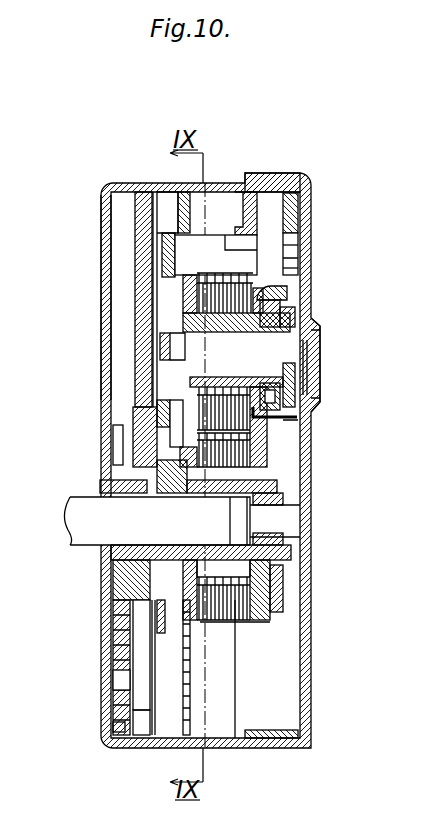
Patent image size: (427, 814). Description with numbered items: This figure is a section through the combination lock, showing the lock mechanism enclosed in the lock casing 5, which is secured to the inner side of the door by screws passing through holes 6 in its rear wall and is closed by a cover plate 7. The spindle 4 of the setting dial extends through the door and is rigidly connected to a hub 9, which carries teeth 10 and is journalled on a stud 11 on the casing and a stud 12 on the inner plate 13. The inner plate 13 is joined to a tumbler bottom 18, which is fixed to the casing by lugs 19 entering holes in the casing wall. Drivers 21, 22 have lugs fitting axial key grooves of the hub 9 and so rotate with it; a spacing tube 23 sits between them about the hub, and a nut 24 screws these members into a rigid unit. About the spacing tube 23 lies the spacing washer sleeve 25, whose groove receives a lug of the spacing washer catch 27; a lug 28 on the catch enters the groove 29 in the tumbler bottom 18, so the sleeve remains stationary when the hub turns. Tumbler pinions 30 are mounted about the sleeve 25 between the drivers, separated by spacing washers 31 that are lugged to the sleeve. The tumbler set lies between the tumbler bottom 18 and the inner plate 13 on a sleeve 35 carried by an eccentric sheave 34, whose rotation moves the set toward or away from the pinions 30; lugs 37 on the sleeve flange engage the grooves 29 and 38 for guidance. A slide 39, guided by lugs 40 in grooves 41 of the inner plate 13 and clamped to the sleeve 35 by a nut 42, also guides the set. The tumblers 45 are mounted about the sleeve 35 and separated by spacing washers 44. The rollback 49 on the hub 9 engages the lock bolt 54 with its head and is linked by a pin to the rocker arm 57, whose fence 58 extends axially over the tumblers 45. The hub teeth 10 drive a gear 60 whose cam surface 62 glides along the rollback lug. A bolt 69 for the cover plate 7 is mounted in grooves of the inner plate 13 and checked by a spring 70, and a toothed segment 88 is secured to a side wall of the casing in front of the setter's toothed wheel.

The dial shaft or spindle 4 is at (100, 513).
The lock casing 5 is at (148, 641).
The holes 6 is at (107, 695).
The cover plate 7 is at (303, 695).
The hub 9 is at (125, 572).
The teeth 10 is at (122, 435).
The stud 11 is at (112, 553).
The stud 12 is at (293, 512).
The inner plate 13 is at (293, 202).
The tumbler bottom 18 is at (157, 183).
The lugs 19 is at (178, 182).
The driver 21 is at (265, 596).
The driver 22 is at (160, 613).
The spacing tube 23 is at (290, 548).
The nut 24 is at (285, 480).
The spacing washer sleeve 25 is at (280, 567).
The spacing washer catch 27 is at (133, 453).
The lug 28 is at (180, 417).
The groove 29 is at (175, 385).
The tumbler pinions 30 is at (200, 622).
The spacing washers 31 is at (250, 613).
The eccentric sheave 34 is at (320, 362).
The sleeve 35 is at (320, 343).
The lugs 37 is at (190, 286).
The groove 38 is at (165, 262).
The slide 39 is at (320, 323).
The lugs 40 is at (292, 300).
The grooves 41 is at (290, 283).
The nut 42 is at (275, 318).
The spacing washers 44 is at (290, 270).
The tumblers 45 is at (239, 274).
The rollback 49 is at (157, 475).
The lock bolt 54 is at (101, 206).
The rocker arm 57 is at (140, 228).
The fence 58 is at (295, 238).
The gear 60 is at (113, 740).
The cam surface 62 is at (142, 728).
The bolt 69 is at (270, 173).
The spring 70 is at (225, 207).
The toothed segment 88 is at (183, 677).